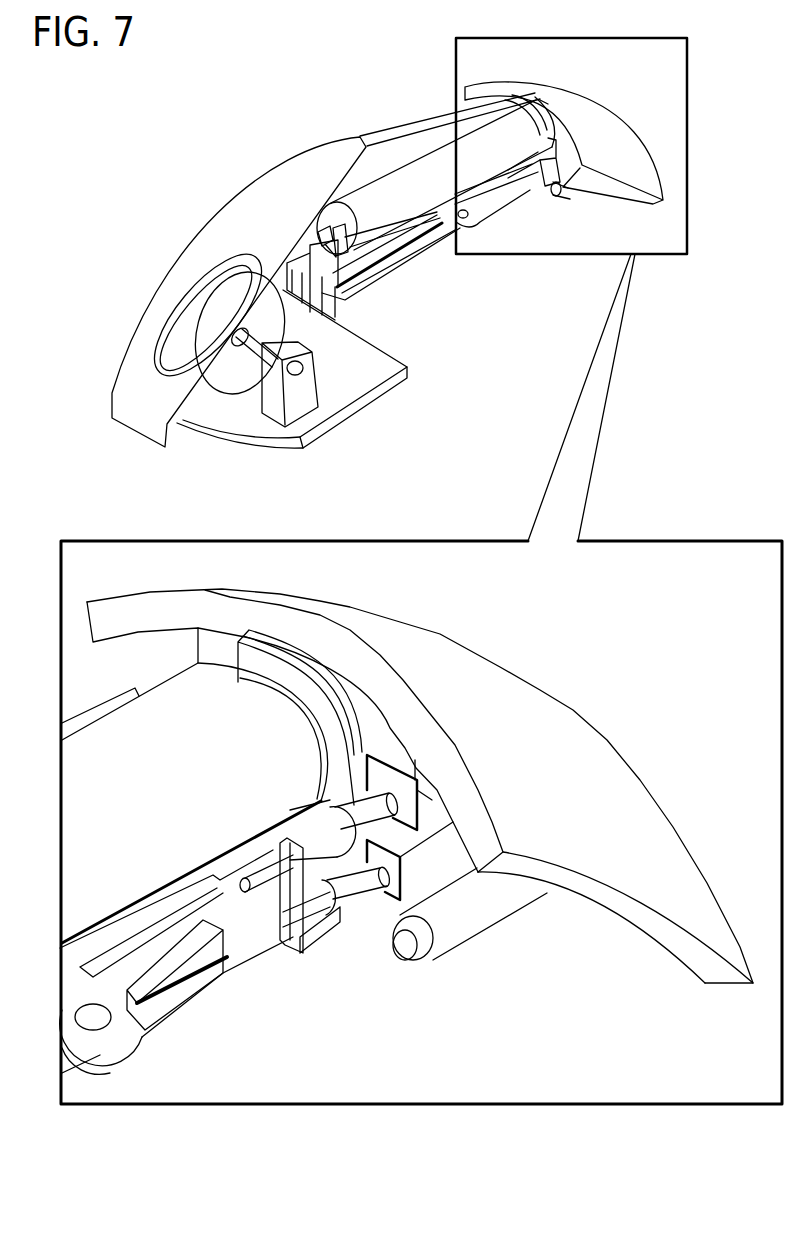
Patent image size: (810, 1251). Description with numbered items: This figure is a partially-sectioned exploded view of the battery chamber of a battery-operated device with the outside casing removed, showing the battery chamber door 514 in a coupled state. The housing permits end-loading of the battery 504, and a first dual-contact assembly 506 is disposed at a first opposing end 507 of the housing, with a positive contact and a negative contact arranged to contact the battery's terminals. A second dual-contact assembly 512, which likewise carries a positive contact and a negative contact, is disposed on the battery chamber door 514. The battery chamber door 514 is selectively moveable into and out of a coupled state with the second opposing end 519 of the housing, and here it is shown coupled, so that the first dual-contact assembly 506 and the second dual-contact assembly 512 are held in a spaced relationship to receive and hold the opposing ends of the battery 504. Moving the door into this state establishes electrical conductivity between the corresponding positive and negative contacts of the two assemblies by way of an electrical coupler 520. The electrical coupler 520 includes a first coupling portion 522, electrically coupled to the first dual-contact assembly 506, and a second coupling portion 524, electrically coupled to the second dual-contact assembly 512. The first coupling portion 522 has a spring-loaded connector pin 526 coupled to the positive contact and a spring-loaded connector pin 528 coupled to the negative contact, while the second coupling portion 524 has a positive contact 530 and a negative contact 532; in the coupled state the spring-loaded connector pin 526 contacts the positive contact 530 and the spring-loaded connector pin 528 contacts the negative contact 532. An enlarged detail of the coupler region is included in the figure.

The battery 504 is at (438, 185).
The first dual-contact assembly 506 is at (335, 250).
The first opposing end 507 is at (384, 310).
The second dual-contact assembly 512 is at (540, 110).
The battery chamber door 514 is at (627, 158).
The second opposing end 519 is at (567, 203).
The electrical coupler 520 is at (548, 202).
The first coupling portion 522 is at (352, 941).
The second coupling portion 524 is at (436, 823).
The spring-loaded connector pin 526 is at (377, 828).
The spring-loaded connector pin 528 is at (363, 907).
The positive contact 530 is at (416, 776).
The negative contact 532 is at (400, 862).